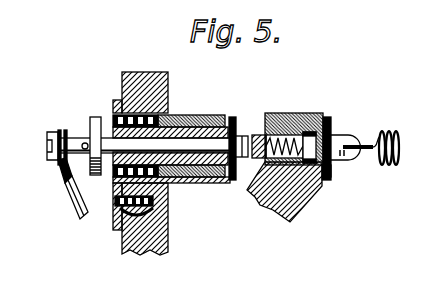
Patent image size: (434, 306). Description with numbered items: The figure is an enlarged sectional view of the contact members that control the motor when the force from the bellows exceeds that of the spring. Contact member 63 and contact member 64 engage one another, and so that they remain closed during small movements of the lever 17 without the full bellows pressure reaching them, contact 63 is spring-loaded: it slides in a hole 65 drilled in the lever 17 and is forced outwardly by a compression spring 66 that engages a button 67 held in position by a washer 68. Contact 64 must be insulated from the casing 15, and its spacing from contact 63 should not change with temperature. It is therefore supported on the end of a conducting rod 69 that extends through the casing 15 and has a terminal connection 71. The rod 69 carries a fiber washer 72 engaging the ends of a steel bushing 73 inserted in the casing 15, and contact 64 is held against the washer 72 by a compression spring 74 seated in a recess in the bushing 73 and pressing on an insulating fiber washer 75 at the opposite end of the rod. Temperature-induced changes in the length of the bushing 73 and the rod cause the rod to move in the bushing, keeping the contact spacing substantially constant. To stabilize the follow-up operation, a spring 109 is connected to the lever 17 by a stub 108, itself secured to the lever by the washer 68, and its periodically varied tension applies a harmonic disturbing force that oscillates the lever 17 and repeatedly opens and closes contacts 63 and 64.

The casing 15 is at (143, 72).
The lever 17 is at (308, 212).
The contact member 63 is at (257, 133).
The contact member 64 is at (247, 165).
The hole 65 is at (290, 120).
The compression spring 66 is at (307, 131).
The button 67 is at (331, 128).
The washer 68 is at (327, 170).
The conducting rod 69 is at (182, 115).
The terminal connection 71 is at (58, 168).
The fiber washer 72 is at (228, 114).
The steel bushing 73 is at (190, 183).
The compression spring 74 is at (113, 125).
The insulating fiber washer 75 is at (90, 119).
The stub 108 is at (343, 140).
The spring 109 is at (388, 172).